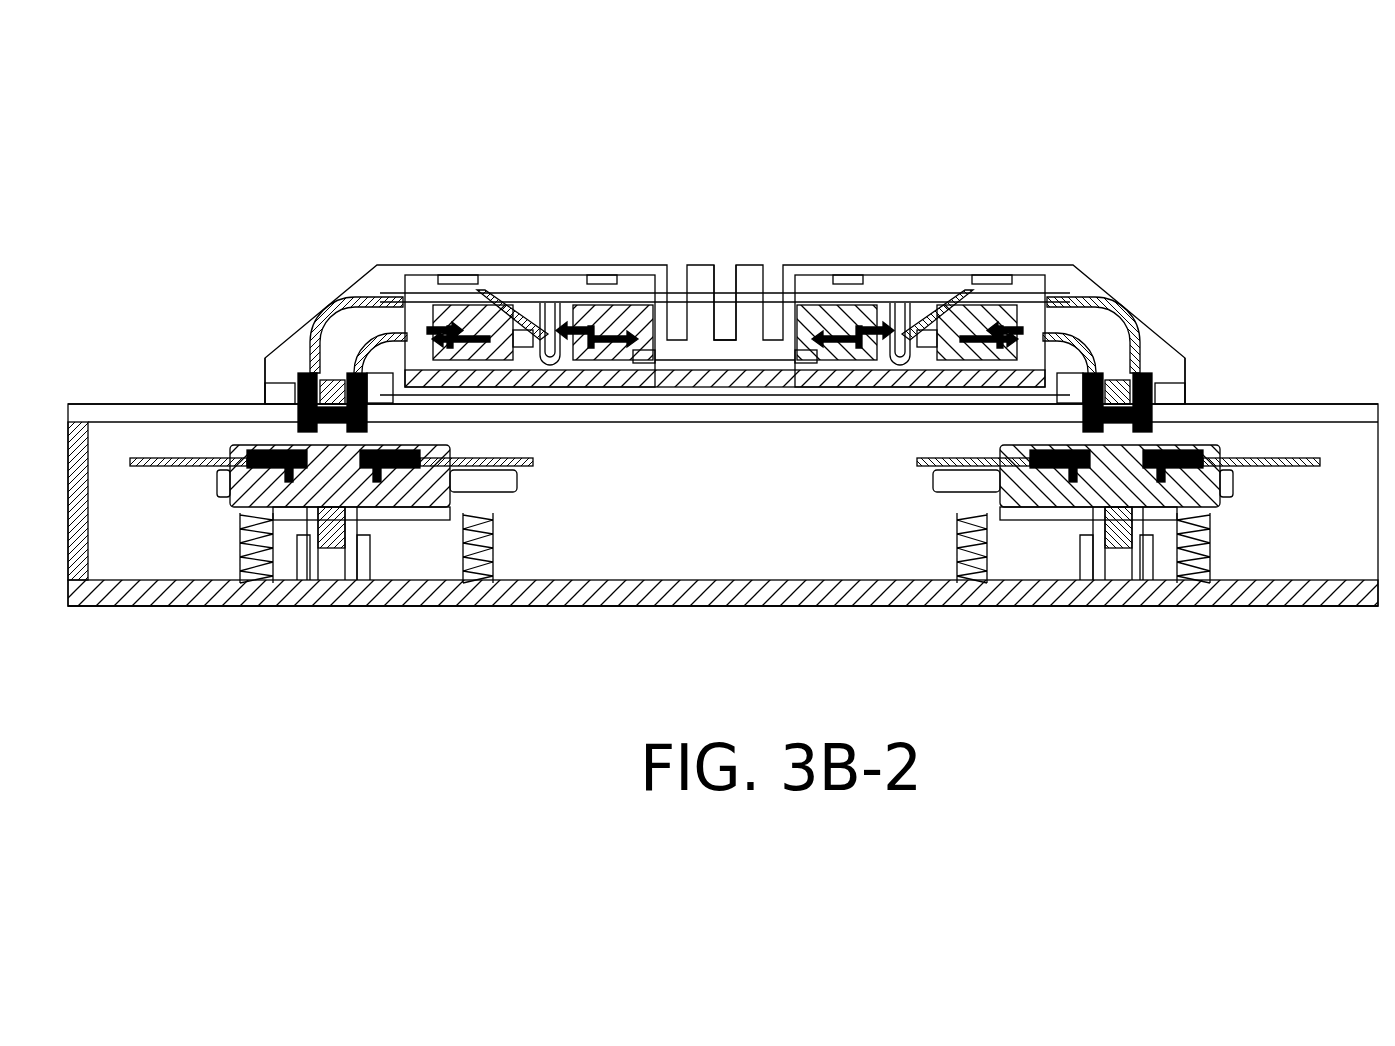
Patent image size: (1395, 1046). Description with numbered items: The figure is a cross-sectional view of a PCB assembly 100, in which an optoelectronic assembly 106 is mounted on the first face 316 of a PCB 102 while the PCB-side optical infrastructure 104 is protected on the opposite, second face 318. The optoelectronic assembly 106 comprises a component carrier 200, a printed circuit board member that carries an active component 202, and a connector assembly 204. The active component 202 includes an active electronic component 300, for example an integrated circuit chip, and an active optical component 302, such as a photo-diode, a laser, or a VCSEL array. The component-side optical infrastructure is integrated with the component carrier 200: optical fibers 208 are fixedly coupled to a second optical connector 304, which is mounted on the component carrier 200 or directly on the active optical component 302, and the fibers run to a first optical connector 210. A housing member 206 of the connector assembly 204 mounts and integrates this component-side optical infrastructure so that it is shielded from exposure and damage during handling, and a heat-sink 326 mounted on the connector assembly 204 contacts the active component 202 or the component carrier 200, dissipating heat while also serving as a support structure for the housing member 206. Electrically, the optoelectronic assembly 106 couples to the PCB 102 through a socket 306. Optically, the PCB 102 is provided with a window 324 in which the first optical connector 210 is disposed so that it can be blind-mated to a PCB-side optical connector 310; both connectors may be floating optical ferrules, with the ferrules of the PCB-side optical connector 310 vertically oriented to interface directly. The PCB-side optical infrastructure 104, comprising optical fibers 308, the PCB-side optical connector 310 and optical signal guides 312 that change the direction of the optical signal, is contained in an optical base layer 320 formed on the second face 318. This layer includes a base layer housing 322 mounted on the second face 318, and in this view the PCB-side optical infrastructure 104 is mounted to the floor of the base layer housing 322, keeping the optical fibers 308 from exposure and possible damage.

The PCB assembly 100 is at (723, 393).
The PCB 102 is at (178, 412).
The PCB-side optical infrastructure 104 is at (1163, 545).
The optoelectronic assembly 106 is at (732, 303).
The component carrier 200 is at (917, 380).
The active component 202 is at (752, 357).
The connector assembly 204 is at (355, 285).
The housing member 206 is at (358, 326).
The optical fibers 208 is at (1053, 350).
The first optical connector 210 is at (313, 463).
The active electronic component 300 is at (665, 360).
The active optical component 302 is at (838, 360).
The second optical connector 304 is at (625, 345).
The socket 306 is at (1070, 298).
The optical fibers 308 is at (1248, 463).
The PCB-side optical connector 310 is at (1163, 453).
The optical signal guides 312 is at (300, 447).
The first face 316 is at (1250, 400).
The second face 318 is at (855, 430).
The optical base layer 320 is at (667, 583).
The base layer housing 322 is at (990, 604).
The window 324 is at (1147, 397).
The heat-sink 326 is at (752, 290).